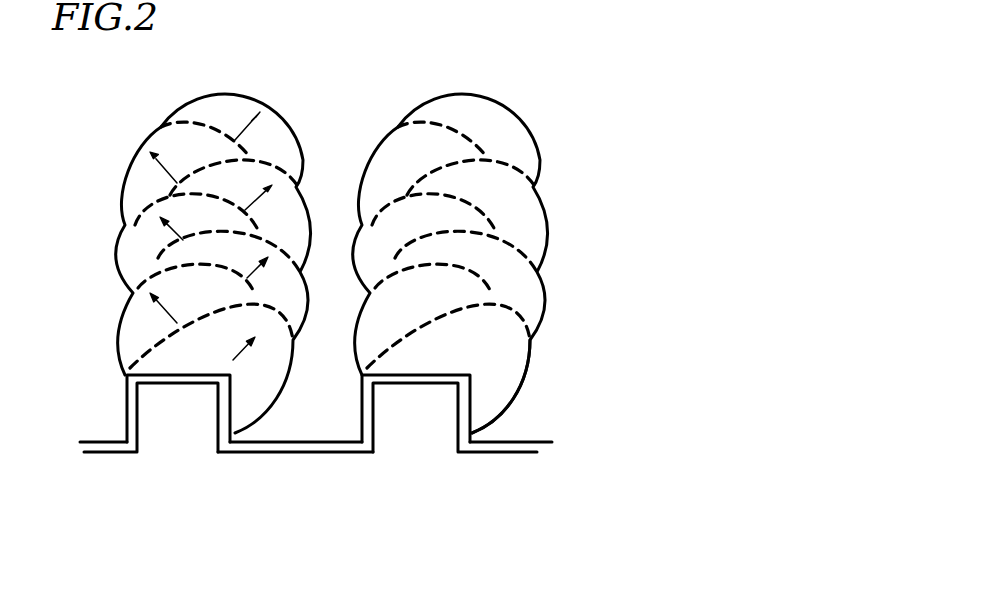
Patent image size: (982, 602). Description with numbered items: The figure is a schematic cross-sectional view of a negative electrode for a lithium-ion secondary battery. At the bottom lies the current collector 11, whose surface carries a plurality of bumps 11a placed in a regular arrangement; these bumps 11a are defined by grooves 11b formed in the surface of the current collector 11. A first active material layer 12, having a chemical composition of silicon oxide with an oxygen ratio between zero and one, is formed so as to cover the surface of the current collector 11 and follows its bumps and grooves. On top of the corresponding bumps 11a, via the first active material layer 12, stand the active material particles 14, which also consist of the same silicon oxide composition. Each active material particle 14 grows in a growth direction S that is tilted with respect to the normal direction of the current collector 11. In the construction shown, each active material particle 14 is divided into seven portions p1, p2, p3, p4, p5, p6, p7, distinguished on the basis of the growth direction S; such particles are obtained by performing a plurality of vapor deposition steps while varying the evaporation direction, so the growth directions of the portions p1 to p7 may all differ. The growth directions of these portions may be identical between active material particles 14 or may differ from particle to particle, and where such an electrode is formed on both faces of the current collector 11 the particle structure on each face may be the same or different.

The current collector 11 is at (428, 472).
The bumps 11a is at (153, 422).
The grooves 11b is at (320, 425).
The first active material layer 12 is at (540, 450).
The active material particles 14 is at (580, 218).
The first portion of active material particle p1 is at (595, 367).
The second portion of active material particle p2 is at (418, 293).
The third portion of active material particle p3 is at (488, 263).
The fourth portion of active material particle p4 is at (415, 222).
The fifth portion of active material particle p5 is at (490, 188).
The sixth portion of active material particle p6 is at (422, 152).
The seventh portion of active material particle p7 is at (478, 115).
The growth direction S is at (246, 354).